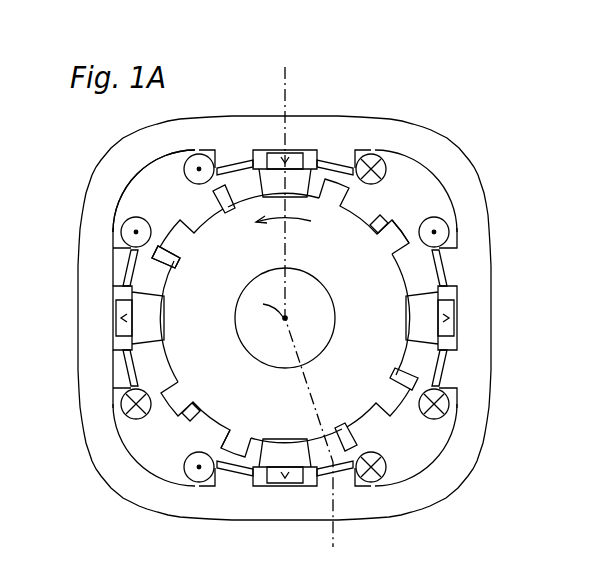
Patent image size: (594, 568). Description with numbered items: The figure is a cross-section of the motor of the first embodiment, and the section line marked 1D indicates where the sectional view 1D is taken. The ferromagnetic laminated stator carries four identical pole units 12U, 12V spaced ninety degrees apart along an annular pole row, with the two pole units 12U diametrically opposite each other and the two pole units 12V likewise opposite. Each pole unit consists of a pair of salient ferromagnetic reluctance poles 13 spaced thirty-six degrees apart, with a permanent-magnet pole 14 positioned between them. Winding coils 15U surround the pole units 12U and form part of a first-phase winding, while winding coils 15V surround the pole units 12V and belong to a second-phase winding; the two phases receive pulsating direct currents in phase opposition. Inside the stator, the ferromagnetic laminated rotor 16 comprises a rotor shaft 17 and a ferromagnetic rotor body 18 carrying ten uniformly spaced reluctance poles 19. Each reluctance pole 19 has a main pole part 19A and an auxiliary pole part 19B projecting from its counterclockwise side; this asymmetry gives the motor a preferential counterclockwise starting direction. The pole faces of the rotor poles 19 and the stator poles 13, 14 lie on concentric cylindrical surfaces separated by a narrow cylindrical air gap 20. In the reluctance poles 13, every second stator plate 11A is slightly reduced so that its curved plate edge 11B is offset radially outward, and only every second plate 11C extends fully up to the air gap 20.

The stator plate 11A is at (128, 262).
The curved plate edge 11B is at (126, 269).
The stator plate 11C is at (120, 279).
The pole unit 12U is at (278, 143).
The pole unit 12V is at (462, 354).
The reluctance pole 13 is at (237, 162).
The permanent-magnet pole 14 is at (296, 157).
The winding coil 15U is at (383, 161).
The winding coil 15V is at (450, 231).
The rotor 16 is at (403, 421).
The rotor shaft 17 is at (335, 310).
The rotor body 18 is at (338, 389).
The reluctance pole 19 is at (412, 228).
The main pole part 19A is at (400, 233).
The auxiliary pole part 19B is at (372, 218).
The air gap 20 is at (153, 246).
The section line 1D- 1D is at (285, 67).